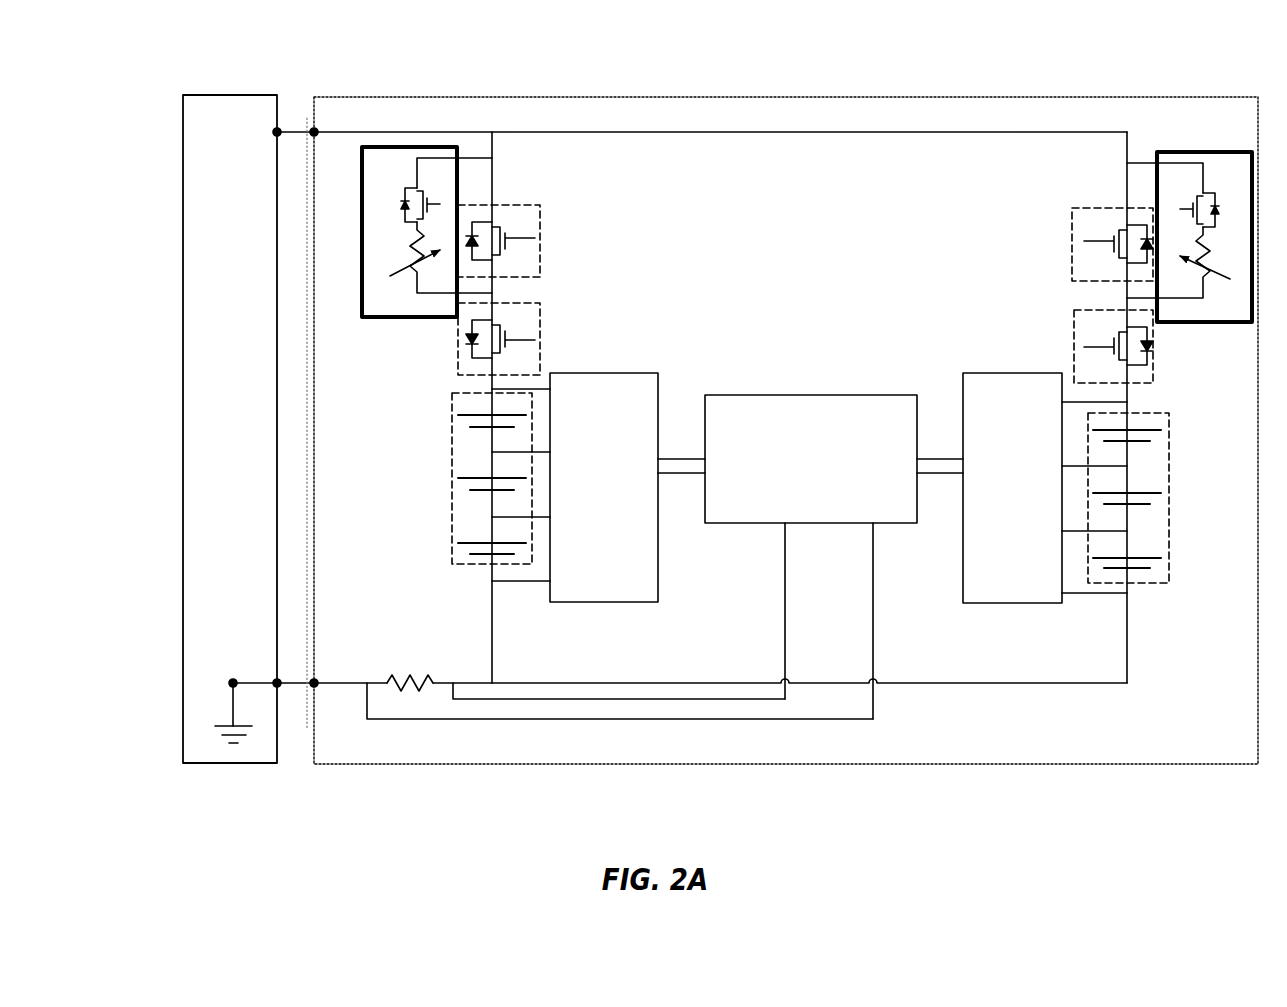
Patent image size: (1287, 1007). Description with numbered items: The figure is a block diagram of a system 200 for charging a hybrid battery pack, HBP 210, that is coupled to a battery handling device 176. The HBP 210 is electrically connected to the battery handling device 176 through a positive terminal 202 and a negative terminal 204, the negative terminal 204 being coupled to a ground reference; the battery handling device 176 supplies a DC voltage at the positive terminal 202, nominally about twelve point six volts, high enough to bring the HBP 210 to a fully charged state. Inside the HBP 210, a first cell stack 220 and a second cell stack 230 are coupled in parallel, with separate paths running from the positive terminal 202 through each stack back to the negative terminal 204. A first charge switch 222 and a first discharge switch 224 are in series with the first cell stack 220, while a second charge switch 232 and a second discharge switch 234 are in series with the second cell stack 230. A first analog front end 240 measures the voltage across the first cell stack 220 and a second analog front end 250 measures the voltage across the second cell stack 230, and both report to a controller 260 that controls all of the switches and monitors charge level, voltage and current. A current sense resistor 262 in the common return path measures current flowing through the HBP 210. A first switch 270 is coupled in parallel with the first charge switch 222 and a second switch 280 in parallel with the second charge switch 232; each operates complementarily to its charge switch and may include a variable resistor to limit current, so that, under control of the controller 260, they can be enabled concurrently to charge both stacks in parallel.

The system 200 is at (1146, 76).
The positive terminal 202 is at (314, 130).
The negative terminal 204 is at (314, 686).
The battery handling device 176 is at (232, 429).
The hybrid battery pack (HBP) 210 is at (775, 97).
The first cell stack 220 is at (452, 455).
The first charge switch 222 is at (540, 236).
The first discharge switch 224 is at (540, 332).
The second cell stack 230 is at (1137, 584).
The second charge switch 232 is at (1072, 227).
The second discharge switch 234 is at (1074, 322).
The first analog front end (AFE) 240 is at (627, 487).
The second analog front end (AFE) 250 is at (1012, 488).
The controller 260 is at (834, 557).
The current sense resistor 262 is at (426, 658).
The first switch 270 is at (412, 318).
The second switch 280 is at (1166, 324).